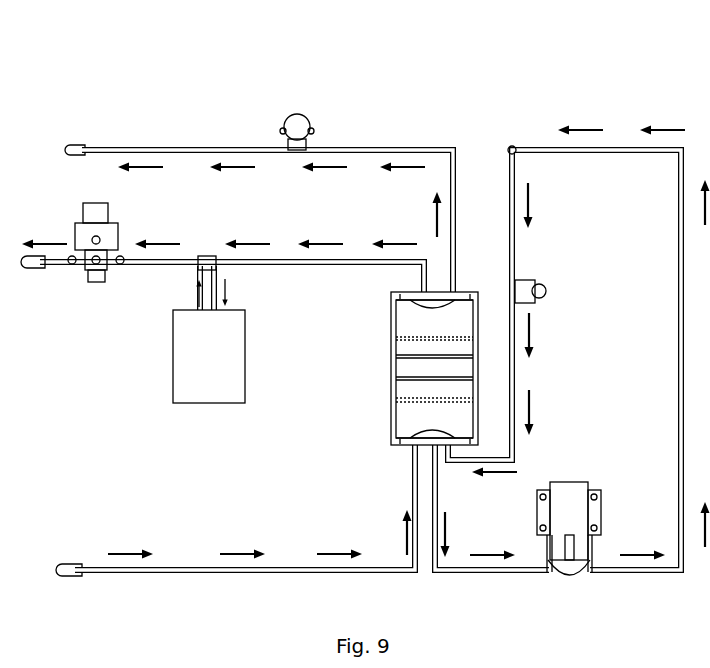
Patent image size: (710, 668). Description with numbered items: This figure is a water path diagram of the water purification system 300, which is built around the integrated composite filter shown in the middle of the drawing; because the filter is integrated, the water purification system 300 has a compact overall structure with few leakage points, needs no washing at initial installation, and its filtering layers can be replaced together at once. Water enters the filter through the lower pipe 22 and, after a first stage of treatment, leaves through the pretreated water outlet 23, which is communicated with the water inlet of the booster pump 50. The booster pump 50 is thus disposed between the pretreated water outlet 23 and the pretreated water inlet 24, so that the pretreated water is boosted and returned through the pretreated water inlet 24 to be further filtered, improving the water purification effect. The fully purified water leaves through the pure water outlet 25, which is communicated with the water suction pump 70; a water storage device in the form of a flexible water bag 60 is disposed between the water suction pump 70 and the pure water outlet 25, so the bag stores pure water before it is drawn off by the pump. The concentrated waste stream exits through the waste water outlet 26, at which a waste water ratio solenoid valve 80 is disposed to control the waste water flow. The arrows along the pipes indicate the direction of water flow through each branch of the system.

The water purification system 300 is at (452, 68).
The waste water ratio solenoid valve 80 is at (305, 118).
The water suction pump 70 is at (80, 265).
The flexible water bag 60 is at (197, 370).
The booster pump 50 is at (572, 507).
The pure water outlet 25 is at (393, 297).
The waste water outlet 26 is at (455, 293).
The pretreated water inlet 24 is at (475, 441).
The pretreated water outlet 23 is at (432, 448).
The outlet pipe 22 is at (413, 448).